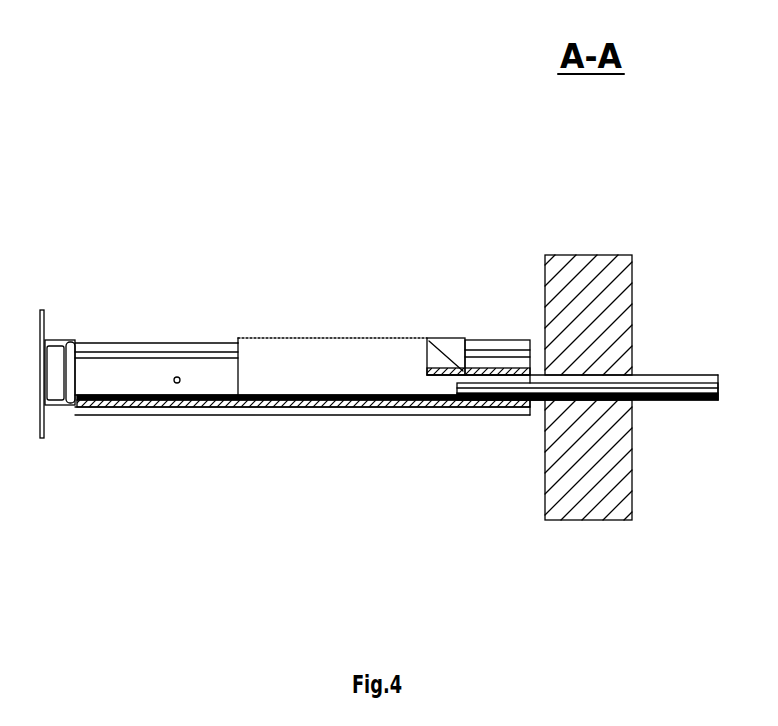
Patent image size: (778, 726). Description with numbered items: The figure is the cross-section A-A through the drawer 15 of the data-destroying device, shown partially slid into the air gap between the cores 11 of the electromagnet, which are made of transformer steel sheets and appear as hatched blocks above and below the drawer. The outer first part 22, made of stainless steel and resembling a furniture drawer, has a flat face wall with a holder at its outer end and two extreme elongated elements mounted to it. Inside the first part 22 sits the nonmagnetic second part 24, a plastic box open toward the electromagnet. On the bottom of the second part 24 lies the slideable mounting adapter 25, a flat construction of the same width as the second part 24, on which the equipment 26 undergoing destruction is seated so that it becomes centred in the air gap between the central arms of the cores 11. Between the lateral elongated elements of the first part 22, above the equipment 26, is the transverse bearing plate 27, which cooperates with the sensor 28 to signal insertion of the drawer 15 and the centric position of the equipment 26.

The cores 11 is at (565, 263).
The drawer 15 is at (43, 313).
The outer first part 22 is at (88, 375).
The nonmagnetic second part 24 is at (353, 360).
The mounting adapter 25 is at (632, 400).
The equipment undergoing destruction 26 is at (600, 387).
The transverse bearing plate 27 is at (430, 340).
The sensor 28 is at (452, 348).